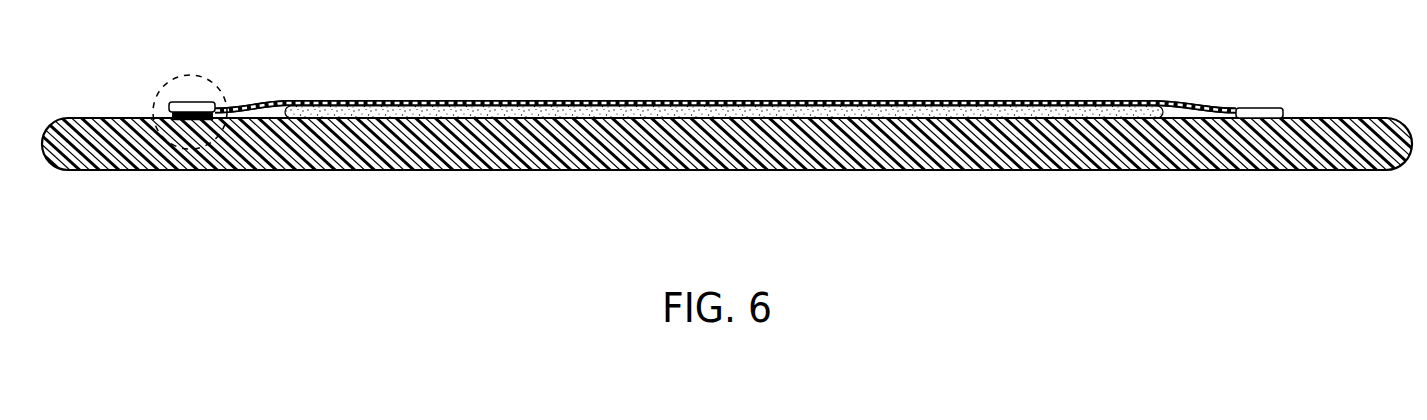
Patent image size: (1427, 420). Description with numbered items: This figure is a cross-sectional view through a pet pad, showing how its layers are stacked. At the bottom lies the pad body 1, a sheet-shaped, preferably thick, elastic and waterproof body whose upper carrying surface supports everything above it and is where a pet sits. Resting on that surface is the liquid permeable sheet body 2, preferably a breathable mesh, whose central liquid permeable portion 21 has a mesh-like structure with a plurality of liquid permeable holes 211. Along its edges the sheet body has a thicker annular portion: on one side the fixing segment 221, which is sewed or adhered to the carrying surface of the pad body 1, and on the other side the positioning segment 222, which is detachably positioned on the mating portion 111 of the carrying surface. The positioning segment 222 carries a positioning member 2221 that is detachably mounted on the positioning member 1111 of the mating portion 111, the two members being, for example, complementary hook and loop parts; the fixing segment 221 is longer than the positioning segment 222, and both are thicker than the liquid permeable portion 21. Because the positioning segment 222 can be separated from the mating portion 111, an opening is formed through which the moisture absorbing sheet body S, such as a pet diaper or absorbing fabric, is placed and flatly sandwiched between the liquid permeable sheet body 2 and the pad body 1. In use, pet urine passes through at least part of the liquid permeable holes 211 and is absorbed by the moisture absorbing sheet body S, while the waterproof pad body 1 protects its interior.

The pad body 1 is at (253, 180).
The mating portion 111 is at (207, 121).
The positioning member 1111 is at (169, 118).
The liquid permeable sheet body 2 is at (989, 86).
The liquid permeable portion 21 is at (772, 99).
The liquid permeable holes 211 is at (827, 90).
The fixing segment 221 is at (1257, 107).
The positioning segment 222 is at (183, 101).
The positioning member 2221 is at (172, 113).
The moisture absorbing sheet body S is at (901, 120).